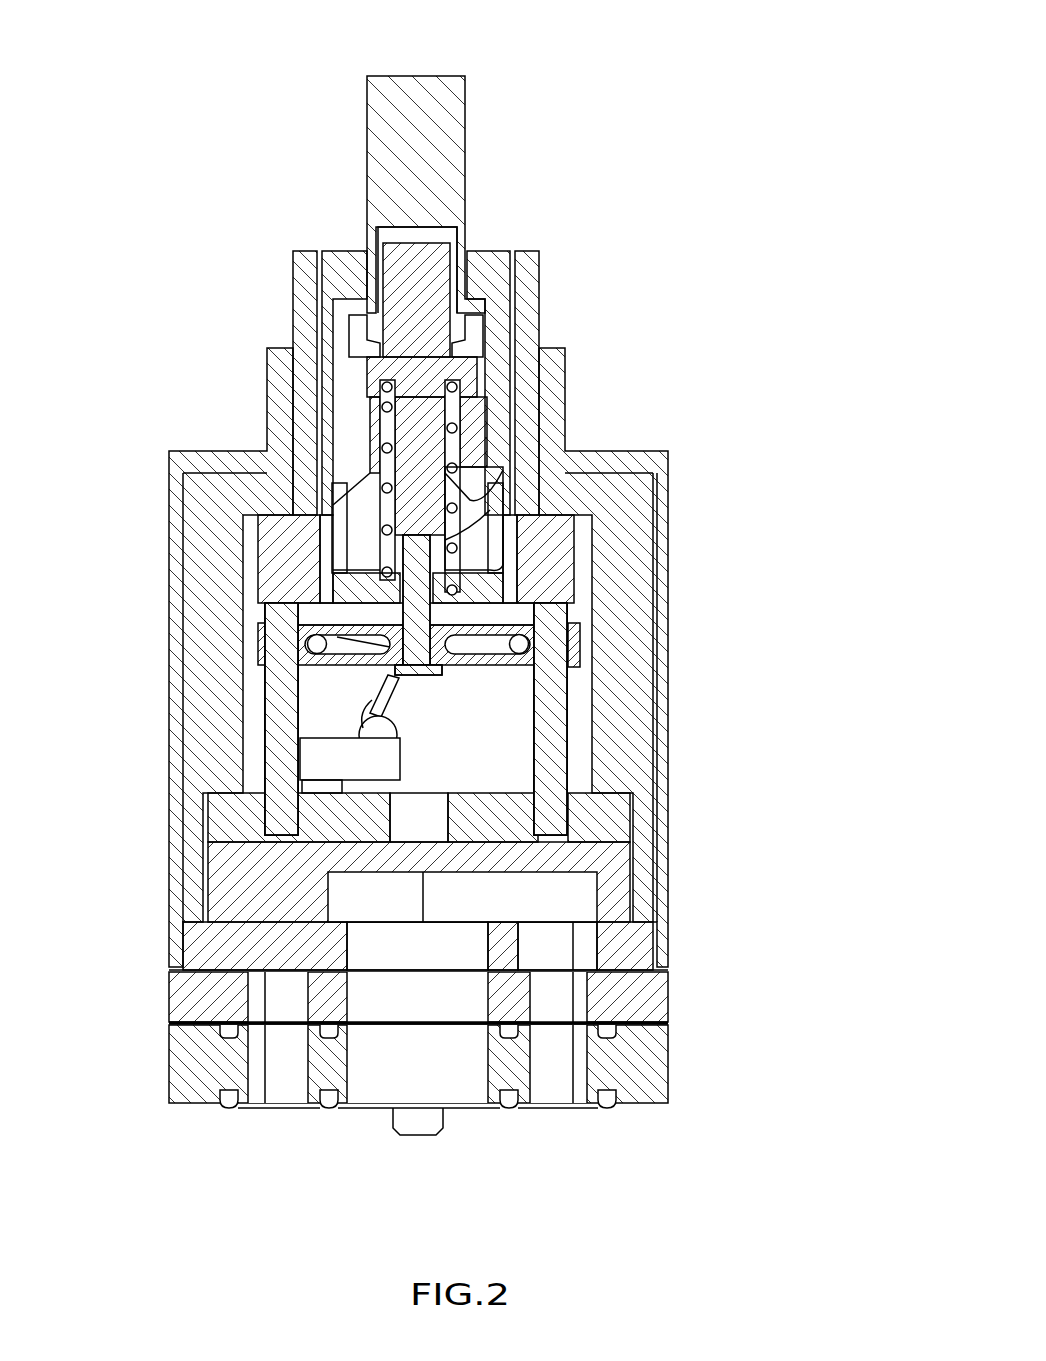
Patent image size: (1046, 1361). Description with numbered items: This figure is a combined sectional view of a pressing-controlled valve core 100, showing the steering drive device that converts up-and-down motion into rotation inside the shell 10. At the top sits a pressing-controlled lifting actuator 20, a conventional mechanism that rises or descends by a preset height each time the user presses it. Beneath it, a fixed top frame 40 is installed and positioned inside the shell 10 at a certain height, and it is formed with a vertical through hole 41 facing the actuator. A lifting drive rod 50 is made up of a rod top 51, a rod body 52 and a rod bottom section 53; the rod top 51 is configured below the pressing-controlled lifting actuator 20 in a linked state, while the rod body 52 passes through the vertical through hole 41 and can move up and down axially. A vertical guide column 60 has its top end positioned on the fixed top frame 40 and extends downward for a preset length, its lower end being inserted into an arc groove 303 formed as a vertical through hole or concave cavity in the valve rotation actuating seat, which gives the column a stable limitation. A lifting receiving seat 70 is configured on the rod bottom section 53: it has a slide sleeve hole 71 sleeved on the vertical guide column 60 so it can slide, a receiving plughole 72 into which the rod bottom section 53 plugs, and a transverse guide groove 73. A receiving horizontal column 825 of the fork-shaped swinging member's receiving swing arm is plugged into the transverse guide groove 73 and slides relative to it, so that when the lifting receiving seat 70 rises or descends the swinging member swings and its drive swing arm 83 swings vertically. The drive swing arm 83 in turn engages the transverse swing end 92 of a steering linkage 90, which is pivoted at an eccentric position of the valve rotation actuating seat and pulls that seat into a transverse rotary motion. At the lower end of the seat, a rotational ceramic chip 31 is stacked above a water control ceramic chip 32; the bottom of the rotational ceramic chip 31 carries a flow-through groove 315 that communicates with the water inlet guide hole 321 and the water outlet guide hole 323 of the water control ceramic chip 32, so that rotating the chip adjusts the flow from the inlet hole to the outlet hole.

The pressing-controlled valve core 100 is at (733, 167).
The shell 10 is at (628, 532).
The pressing-controlled lifting actuator 20 is at (367, 225).
The lifting drive rod 50 is at (521, 415).
The rod top 51 is at (428, 318).
The rod body 52 is at (468, 503).
The rod bottom section 53 is at (518, 483).
The fixed top frame 40 is at (263, 560).
The vertical through hole 41 is at (418, 645).
The vertical guide column 60 is at (265, 740).
The lifting receiving seat 70 is at (413, 658).
The slide sleeve hole 71 is at (527, 613).
The receiving plughole 72 is at (403, 610).
The transverse guide groove 73 is at (343, 646).
The receiving horizontal column 825 is at (317, 644).
The drive swing arm 83 is at (408, 690).
The steering linkage 90 is at (342, 762).
The transverse swing end 92 is at (395, 772).
The arc groove 303 is at (565, 808).
The rotational ceramic chip 31 is at (481, 867).
The flow-through groove 315 is at (545, 890).
The water control ceramic chip 32 is at (464, 984).
The water inlet guide hole 321 is at (595, 940).
The water outlet guide hole 323 is at (468, 966).